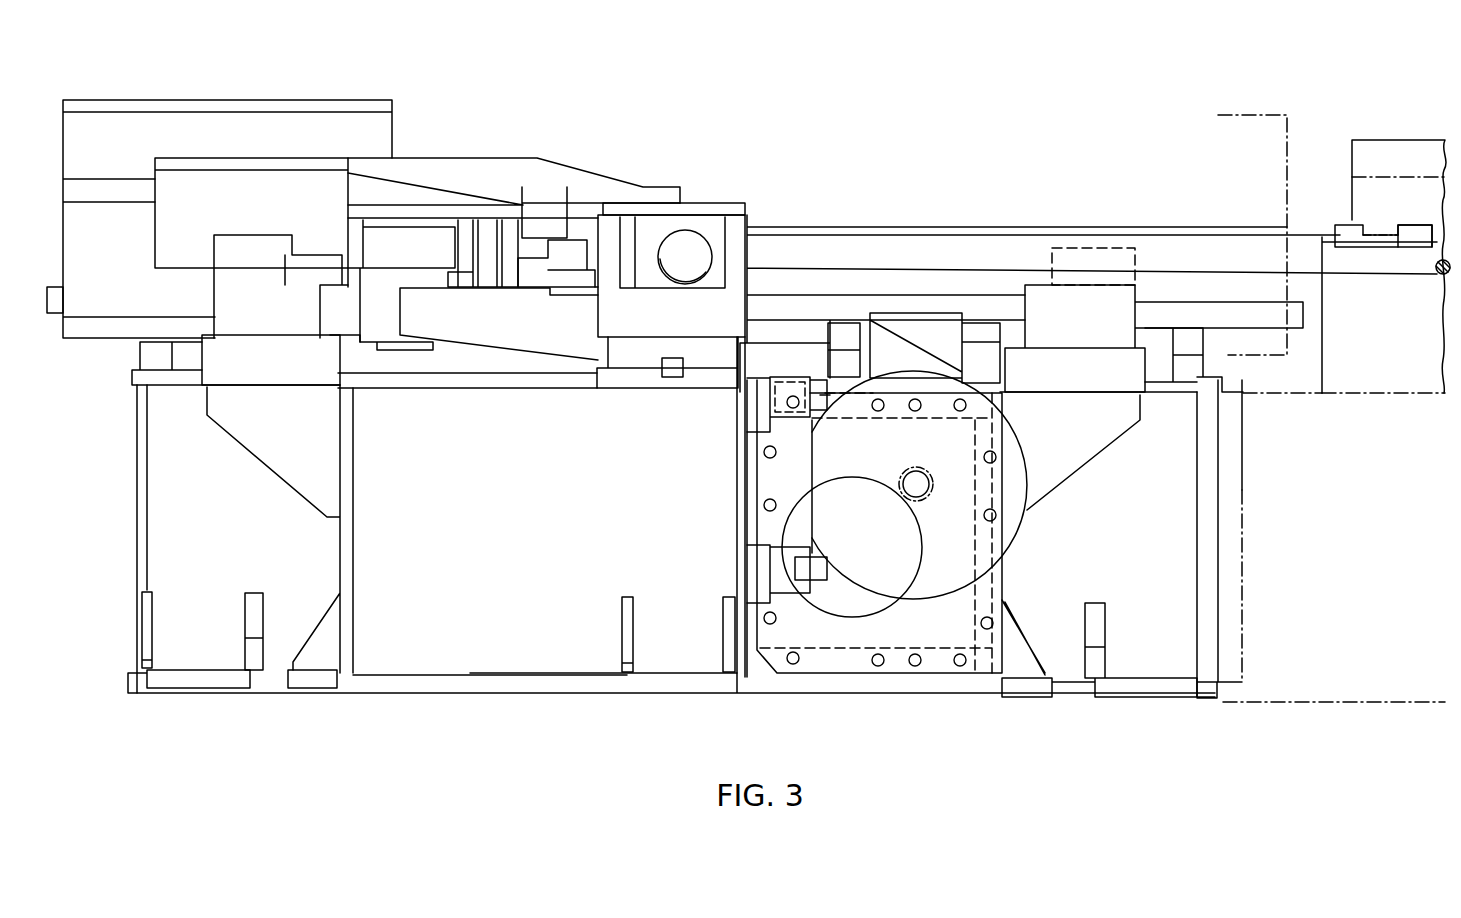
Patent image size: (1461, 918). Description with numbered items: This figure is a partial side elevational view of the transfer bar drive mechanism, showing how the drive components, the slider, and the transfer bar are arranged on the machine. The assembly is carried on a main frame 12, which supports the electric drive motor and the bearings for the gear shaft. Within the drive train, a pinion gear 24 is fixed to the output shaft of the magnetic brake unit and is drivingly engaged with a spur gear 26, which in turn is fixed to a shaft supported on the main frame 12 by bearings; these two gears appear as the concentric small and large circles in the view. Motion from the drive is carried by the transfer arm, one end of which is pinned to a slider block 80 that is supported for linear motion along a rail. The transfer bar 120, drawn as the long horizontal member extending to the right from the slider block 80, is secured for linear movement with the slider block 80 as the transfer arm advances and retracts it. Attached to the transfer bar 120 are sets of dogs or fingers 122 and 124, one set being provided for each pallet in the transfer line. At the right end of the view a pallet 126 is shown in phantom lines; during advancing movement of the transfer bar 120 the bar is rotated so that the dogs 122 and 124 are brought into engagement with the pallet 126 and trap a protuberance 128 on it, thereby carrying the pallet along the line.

The main frame 12 is at (1232, 585).
The pinion gear 24 is at (927, 470).
The spur gear 26 is at (922, 530).
The slider block 80 is at (720, 207).
The transfer bar 120 is at (815, 227).
The dog 122 is at (1345, 225).
The dog 124 is at (1415, 225).
The pallet 126 is at (1375, 140).
The protuberance 128 is at (1375, 232).